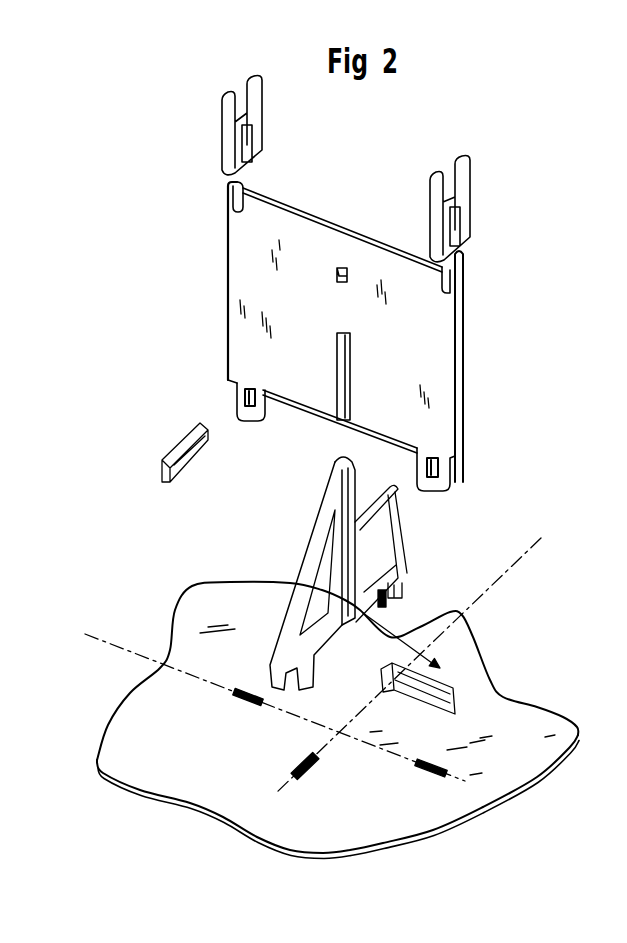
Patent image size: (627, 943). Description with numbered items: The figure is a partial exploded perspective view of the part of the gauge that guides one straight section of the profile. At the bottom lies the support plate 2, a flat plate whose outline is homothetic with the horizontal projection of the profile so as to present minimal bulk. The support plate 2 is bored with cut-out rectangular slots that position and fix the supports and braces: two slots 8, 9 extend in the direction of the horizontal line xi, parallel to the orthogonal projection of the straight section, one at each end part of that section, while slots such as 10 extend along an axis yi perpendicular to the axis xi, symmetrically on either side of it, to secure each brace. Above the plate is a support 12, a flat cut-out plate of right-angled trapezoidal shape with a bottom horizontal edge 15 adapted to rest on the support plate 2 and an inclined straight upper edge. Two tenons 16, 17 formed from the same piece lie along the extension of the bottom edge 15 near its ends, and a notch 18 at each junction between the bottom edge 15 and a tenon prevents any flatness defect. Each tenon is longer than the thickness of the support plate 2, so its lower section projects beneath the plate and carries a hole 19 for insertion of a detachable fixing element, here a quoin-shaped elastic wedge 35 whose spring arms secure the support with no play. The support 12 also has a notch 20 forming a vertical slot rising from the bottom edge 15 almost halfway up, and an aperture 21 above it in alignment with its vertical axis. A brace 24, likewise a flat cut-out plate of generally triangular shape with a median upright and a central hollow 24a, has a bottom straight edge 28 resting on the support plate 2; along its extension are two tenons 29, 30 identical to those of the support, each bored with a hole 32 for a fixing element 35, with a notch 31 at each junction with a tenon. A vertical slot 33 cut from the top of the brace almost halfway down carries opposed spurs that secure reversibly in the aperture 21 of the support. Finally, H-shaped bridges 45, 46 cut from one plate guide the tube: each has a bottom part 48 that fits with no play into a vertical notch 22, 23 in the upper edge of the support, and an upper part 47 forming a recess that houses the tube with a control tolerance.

The support plate 2 is at (371, 818).
The slot 8 is at (247, 700).
The slot 9 is at (432, 776).
The slot 10 is at (316, 775).
The support 12 is at (458, 325).
The bottom horizontal edge 15 is at (350, 365).
The tenon 16 is at (240, 397).
The tenon 17 is at (449, 456).
The notch 18 is at (245, 390).
The hole 19 is at (450, 488).
The notch forming a vertical slot 20 is at (335, 337).
The aperture 21 is at (343, 268).
The vertical notch 22 is at (244, 188).
The vertical notch 23 is at (453, 266).
The brace 24 is at (366, 558).
The central hollow 24a is at (318, 580).
The bottom straight edge 28 is at (450, 612).
The tenon 29 is at (316, 650).
The tenon 30 is at (400, 590).
The notch 31 is at (247, 688).
The hole 32 is at (412, 553).
The vertical slot 33 is at (345, 495).
The elastic wedge 35 is at (450, 667).
The bridge 45 is at (270, 102).
The bridge 46 is at (481, 167).
The upper part 47 is at (240, 92).
The bottom part 48 is at (246, 141).
The horizontal line xi is at (85, 634).
The axis yi is at (540, 540).